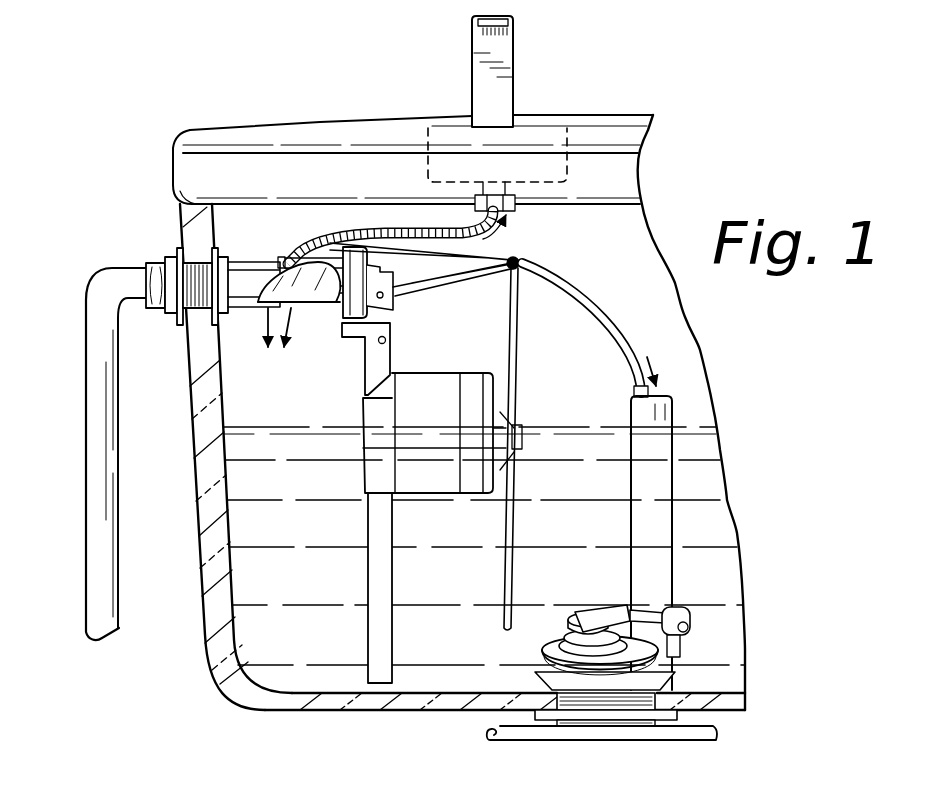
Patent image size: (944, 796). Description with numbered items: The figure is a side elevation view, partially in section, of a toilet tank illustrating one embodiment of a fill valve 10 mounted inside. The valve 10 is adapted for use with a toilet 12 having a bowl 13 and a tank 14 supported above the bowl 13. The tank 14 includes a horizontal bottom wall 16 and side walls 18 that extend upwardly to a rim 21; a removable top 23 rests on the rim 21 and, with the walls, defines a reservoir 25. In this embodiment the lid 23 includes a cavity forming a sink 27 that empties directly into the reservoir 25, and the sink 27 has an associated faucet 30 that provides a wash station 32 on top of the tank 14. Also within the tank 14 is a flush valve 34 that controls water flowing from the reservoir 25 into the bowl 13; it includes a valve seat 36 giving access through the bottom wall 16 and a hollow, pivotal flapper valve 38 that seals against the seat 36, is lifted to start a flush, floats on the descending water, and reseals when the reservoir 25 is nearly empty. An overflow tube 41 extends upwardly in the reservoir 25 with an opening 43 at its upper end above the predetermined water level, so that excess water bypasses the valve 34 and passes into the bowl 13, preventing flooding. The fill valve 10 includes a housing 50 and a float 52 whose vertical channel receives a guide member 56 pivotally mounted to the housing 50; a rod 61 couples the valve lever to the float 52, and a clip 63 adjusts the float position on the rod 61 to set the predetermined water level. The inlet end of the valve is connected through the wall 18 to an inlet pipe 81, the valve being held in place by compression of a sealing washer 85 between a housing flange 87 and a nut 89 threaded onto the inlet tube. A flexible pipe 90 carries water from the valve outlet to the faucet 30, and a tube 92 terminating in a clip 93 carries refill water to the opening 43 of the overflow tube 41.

The toilet fill valve 10 is at (250, 237).
The toilet 12 is at (720, 67).
The bowl 13 is at (495, 733).
The tank 14 is at (186, 624).
The bottom wall 16 is at (283, 705).
The side walls 18 is at (207, 555).
The rim 21 is at (186, 193).
The removable top 23 is at (193, 153).
The reservoir 25 is at (613, 247).
The sink 27 is at (432, 140).
The faucet 30 is at (503, 84).
The wash station 32 is at (595, 90).
The flush valve 34 is at (702, 612).
The valve seat 36 is at (647, 668).
The flapper valve 38 is at (660, 655).
The overflow tube 41 is at (658, 483).
The opening 43 is at (668, 390).
The housing 50 is at (250, 308).
The float 52 is at (422, 393).
The guide member 56 is at (366, 368).
The rod 61 is at (517, 302).
The clip 63 is at (520, 424).
The inlet pipe 81 is at (90, 468).
The sealing washer 85 is at (219, 390).
The housing flange 87 is at (177, 240).
The nut 89 is at (148, 264).
The flexible pipe 90 is at (377, 228).
The tube 92 is at (620, 338).
The clip 93 is at (637, 386).